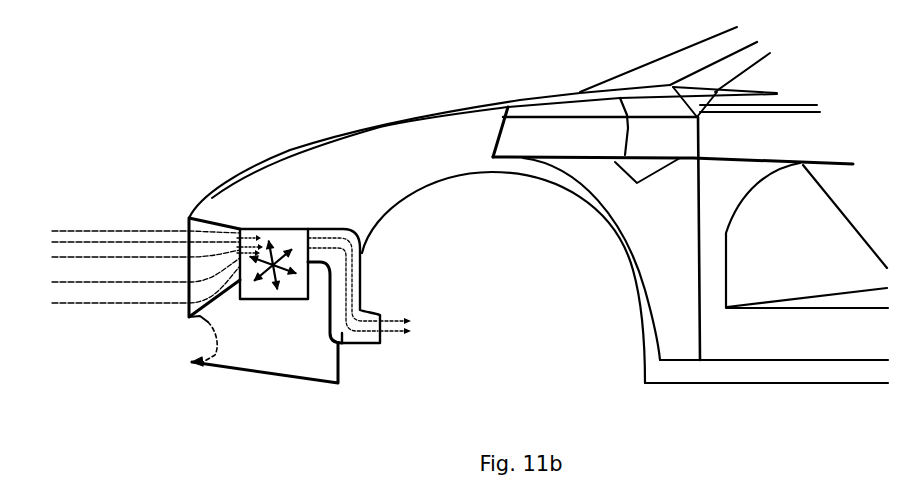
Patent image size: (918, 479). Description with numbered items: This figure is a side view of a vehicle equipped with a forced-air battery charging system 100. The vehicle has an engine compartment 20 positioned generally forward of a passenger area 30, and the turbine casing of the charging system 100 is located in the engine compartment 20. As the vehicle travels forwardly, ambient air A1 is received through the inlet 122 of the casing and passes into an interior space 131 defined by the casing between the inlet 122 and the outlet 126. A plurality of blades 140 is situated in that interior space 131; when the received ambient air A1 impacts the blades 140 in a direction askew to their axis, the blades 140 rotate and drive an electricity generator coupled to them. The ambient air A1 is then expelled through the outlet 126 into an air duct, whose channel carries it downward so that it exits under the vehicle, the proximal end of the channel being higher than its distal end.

The engine compartment 20 is at (377, 160).
The passenger area 30 is at (780, 272).
The forced-air battery charging system 100 is at (268, 340).
The inlet 122 is at (236, 238).
The outlet 126 is at (314, 232).
The interior space 131 is at (298, 288).
The blades 140 is at (275, 287).
The ambient air A1 is at (117, 230).